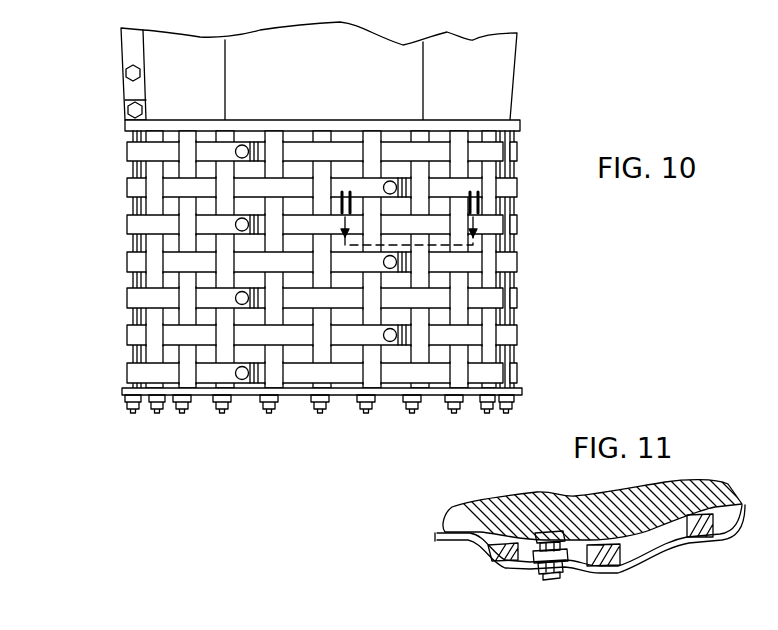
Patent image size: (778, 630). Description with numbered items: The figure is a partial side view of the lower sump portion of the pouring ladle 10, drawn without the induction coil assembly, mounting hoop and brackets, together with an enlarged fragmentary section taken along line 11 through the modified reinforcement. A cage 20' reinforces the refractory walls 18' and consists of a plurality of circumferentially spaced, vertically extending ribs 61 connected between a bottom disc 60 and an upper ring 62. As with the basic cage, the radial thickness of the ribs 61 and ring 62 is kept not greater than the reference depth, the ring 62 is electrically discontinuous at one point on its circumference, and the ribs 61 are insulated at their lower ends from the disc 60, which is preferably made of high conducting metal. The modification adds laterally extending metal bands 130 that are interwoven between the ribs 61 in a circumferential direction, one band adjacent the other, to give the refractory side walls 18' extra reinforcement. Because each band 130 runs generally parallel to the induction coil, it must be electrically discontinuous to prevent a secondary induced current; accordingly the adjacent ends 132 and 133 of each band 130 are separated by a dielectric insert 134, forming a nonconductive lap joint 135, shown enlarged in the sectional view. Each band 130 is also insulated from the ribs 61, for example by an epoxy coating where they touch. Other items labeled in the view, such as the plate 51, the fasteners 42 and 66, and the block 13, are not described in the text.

In FIG. 10, the pouring ladle 10 is at (516, 62).
In FIG. 10, the side plate 51 is at (132, 48).
In FIG. 10, the hex bolt 42 is at (163, 85).
In FIG. 10, the hex bolt 66 is at (125, 107).
In FIG. 10, the support block 13 is at (354, 82).
In FIG. 10, the upper ring 62 is at (352, 127).
In FIG. 10, the cage 20' is at (356, 299).
In FIG. 10, the metal band 130 is at (304, 378).
In FIG. 11, the metal band 130 is at (678, 548).
In FIG. 10, the rib 61 is at (458, 376).
In FIG. 11, the rib 61 is at (608, 556).
In FIG. 10, the nonconductive lap joint 135 is at (247, 391).
In FIG. 11, the nonconductive lap joint 135 is at (571, 563).
In FIG. 10, the section line 11— 11 is at (409, 218).
In FIG. 10, the bottom disc 60 is at (390, 396).
In FIG. 11, the refractory wall 18' is at (582, 515).
In FIG. 11, the band end 132 is at (566, 540).
In FIG. 11, the band end 133 is at (520, 573).
In FIG. 11, the dielectric insert 134 is at (535, 573).